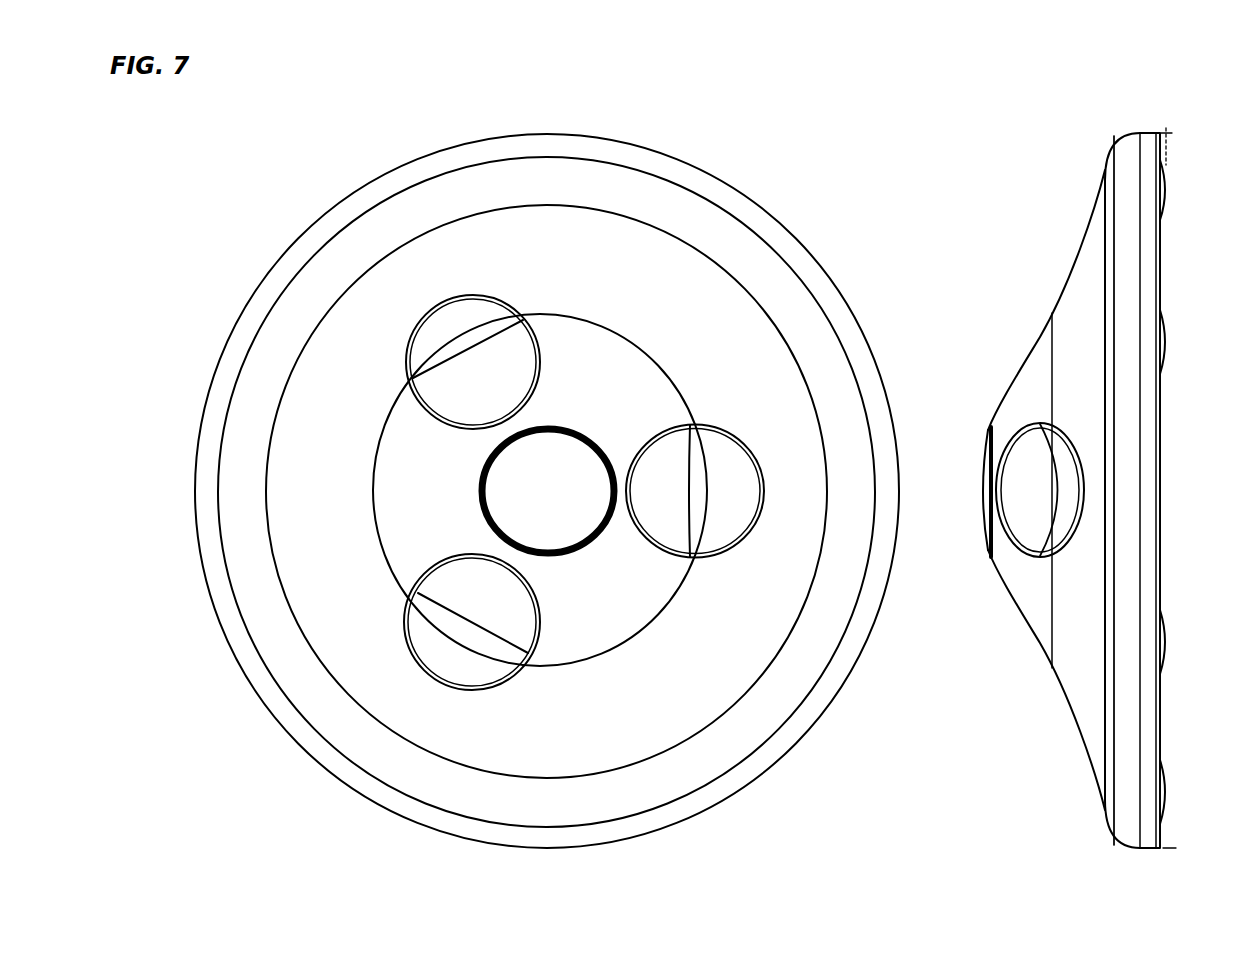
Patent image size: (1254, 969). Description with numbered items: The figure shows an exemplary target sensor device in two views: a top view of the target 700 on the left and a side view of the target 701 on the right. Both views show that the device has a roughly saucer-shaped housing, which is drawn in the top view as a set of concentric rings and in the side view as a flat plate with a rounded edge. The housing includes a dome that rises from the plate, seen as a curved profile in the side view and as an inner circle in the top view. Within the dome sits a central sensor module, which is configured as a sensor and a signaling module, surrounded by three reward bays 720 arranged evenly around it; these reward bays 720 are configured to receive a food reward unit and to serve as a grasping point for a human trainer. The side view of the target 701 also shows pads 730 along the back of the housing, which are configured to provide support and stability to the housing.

The target 700 is at (657, 491).
The target 701 is at (1081, 483).
The reward bays 720 is at (490, 291).
The pads 730 is at (1166, 338).